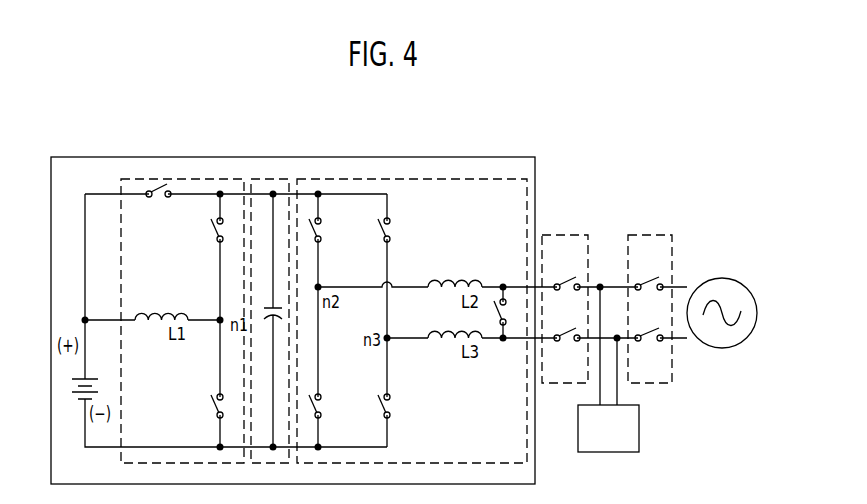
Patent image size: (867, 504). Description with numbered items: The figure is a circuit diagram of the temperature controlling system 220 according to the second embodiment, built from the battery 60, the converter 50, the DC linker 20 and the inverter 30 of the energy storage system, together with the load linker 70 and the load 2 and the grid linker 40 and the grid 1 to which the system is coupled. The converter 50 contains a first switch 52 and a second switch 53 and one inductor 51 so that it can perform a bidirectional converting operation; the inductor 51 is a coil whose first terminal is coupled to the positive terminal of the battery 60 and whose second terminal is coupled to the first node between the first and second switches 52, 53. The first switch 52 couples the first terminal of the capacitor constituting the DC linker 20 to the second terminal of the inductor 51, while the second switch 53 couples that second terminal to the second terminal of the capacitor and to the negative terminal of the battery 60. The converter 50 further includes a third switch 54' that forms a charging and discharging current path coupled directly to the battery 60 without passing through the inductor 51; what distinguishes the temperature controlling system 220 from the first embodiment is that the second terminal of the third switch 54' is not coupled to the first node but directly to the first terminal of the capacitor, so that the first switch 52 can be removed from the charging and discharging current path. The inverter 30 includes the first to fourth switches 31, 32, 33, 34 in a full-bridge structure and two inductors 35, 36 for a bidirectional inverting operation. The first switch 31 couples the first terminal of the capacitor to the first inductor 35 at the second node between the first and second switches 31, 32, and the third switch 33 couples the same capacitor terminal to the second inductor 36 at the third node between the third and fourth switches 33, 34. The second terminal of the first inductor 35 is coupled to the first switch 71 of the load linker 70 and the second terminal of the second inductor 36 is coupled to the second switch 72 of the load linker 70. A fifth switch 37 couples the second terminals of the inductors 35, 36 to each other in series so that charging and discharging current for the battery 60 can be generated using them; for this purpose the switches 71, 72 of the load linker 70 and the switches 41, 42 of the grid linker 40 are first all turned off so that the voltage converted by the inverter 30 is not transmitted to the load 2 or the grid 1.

The grid 1 is at (722, 278).
The load 2 is at (608, 452).
The DC linker 20 is at (270, 179).
The inverter 30 is at (418, 179).
The first switch 31 is at (322, 229).
The second switch 32 is at (322, 406).
The third switch 33 is at (391, 229).
The fourth switch 34 is at (391, 406).
The first inductor L2 35 is at (450, 279).
The second inductor L3 36 is at (452, 346).
The fifth switch 37 is at (492, 308).
The grid linker 40 is at (650, 235).
The switch 41 is at (652, 281).
The switch 42 is at (652, 344).
The converter 50 is at (190, 179).
The inductor L1 51 is at (163, 328).
The first switch 52 is at (213, 229).
The second switch 53 is at (213, 406).
The third switch 54' is at (152, 158).
The battery 60 is at (72, 391).
The load linker 70 is at (568, 235).
The first switch 71 is at (568, 281).
The second switch 72 is at (568, 344).
The temperature controlling system 220 is at (332, 157).